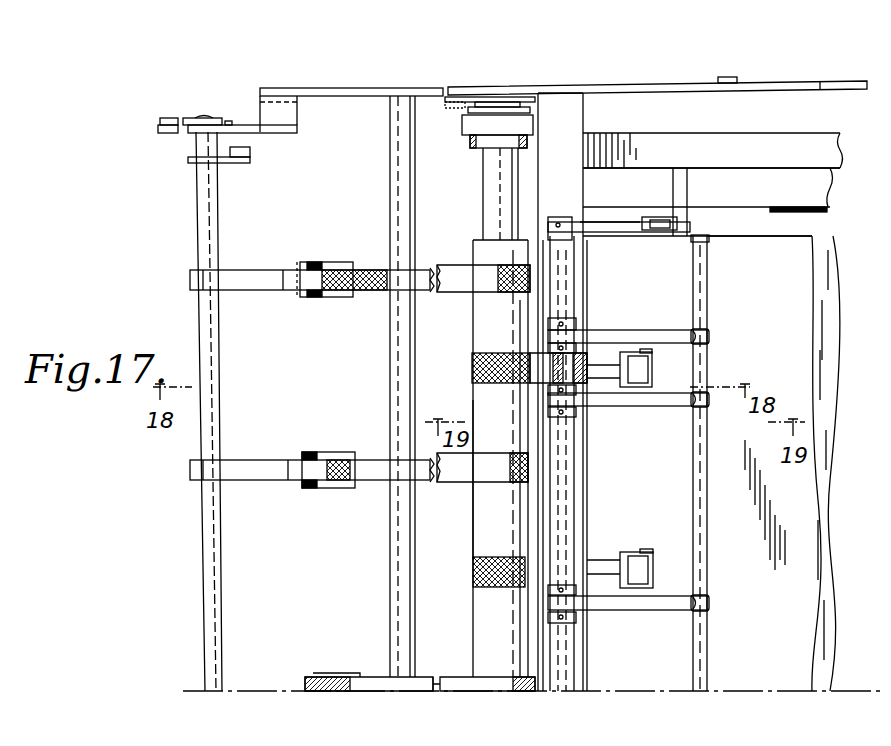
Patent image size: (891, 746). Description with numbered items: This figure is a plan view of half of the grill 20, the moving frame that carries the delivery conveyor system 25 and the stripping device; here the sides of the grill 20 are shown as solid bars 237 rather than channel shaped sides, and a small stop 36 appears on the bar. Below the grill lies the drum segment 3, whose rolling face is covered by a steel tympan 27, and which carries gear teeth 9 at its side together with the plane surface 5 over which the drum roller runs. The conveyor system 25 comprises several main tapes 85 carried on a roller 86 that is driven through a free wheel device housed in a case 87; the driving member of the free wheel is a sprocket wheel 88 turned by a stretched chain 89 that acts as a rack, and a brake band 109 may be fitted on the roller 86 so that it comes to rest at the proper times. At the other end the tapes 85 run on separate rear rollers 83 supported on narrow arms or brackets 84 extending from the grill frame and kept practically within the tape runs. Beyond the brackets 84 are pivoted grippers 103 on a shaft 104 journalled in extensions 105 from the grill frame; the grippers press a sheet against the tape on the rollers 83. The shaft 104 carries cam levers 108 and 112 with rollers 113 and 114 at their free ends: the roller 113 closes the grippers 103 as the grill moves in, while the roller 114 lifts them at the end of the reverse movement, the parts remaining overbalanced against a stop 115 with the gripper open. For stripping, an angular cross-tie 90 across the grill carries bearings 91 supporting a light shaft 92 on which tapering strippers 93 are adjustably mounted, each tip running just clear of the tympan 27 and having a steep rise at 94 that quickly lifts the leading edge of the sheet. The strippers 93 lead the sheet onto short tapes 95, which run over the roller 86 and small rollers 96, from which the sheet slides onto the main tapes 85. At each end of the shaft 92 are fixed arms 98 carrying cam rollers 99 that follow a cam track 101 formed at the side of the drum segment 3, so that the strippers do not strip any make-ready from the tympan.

The drum segment 3 is at (832, 397).
The plane surface 5 is at (812, 193).
The gear teeth 9 is at (718, 150).
The grill 20 is at (622, 84).
The conveyor system 25 is at (473, 216).
The tympan 27 is at (800, 262).
The stop 36 is at (738, 79).
The rollers 83 is at (335, 262).
The arms or brackets 84 is at (336, 265).
The tapes 85 is at (453, 269).
The roller 86 is at (478, 405).
The case 87 is at (463, 127).
The sprocket wheel 88 is at (497, 104).
The stretched chain 89 is at (460, 100).
The angular cross-tie 90 is at (568, 121).
The bearings 91 is at (575, 258).
The light shaft 92 is at (575, 308).
The strippers 93 is at (659, 407).
The steep rise 94 is at (708, 405).
The short tapes 95 is at (476, 356).
The small rollers 96 is at (647, 368).
The arms 98 is at (605, 233).
The cam rollers 99 is at (668, 232).
The cam track 101 is at (690, 232).
The grippers 103 is at (250, 462).
The shaft 104 is at (218, 396).
The extensions 105 is at (284, 127).
The cam lever 108 is at (222, 164).
The brake band 109 is at (472, 146).
The cam lever 112 is at (189, 118).
The roller 113 is at (252, 152).
The roller 114 is at (168, 134).
The stop 115 is at (229, 120).
The solid bars 237 is at (821, 82).